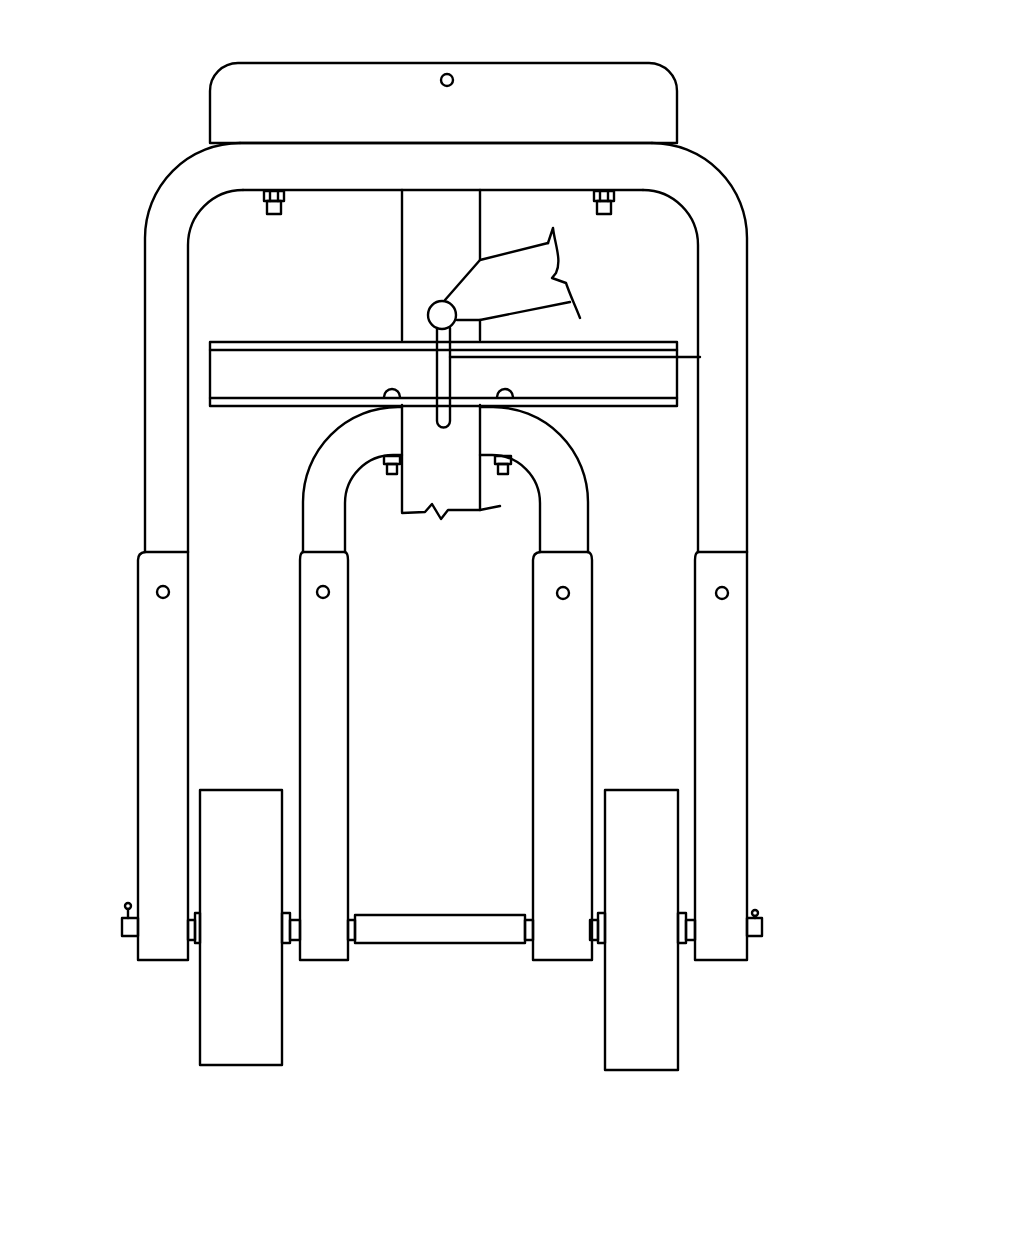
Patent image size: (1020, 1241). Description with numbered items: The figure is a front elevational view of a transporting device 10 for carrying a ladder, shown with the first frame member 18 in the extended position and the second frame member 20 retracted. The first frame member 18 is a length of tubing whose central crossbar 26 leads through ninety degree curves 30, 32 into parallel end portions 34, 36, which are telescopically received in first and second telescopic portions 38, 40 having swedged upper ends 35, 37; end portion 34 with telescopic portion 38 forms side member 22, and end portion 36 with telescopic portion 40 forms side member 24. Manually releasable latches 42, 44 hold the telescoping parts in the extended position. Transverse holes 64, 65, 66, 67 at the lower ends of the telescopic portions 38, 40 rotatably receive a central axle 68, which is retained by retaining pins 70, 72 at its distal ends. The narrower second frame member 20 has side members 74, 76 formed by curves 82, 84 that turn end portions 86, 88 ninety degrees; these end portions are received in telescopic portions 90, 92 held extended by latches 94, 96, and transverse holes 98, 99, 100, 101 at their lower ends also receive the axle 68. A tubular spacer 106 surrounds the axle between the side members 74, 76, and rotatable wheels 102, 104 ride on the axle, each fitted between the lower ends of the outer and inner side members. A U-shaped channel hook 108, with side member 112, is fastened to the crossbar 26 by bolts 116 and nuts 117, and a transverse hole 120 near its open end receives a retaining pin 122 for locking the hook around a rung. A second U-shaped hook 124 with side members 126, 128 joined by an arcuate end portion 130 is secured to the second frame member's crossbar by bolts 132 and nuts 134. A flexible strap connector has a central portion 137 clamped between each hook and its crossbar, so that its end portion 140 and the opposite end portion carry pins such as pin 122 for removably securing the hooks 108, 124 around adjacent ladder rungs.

The transporting device 10 is at (122, 212).
The first frame member 18 is at (321, 194).
The second frame member 20 is at (562, 460).
The side member 22 is at (142, 298).
The side member 24 is at (750, 277).
The crossbar 26 is at (351, 166).
The ninety degree curve 30 is at (158, 179).
The ninety degree curve 32 is at (706, 158).
The end portion 34 is at (143, 329).
The upper end of telescopic portion 35 is at (143, 553).
The end portion 36 is at (749, 495).
The upper end of telescopic portion 37 is at (750, 559).
The first telescopic portion 38 is at (137, 766).
The second telescopic portion 40 is at (748, 655).
The manually releasable latch 42 is at (157, 593).
The manually releasable latch 44 is at (729, 594).
The transverse hole 64 is at (98, 953).
The transverse hole 65 is at (134, 966).
The transverse hole 66 is at (713, 964).
The transverse hole 67 is at (748, 962).
The central axle 68 is at (762, 928).
The retaining pin 70 is at (124, 903).
The retaining pin 72 is at (758, 910).
The side member 74 is at (300, 721).
The side member 76 is at (592, 492).
The curve 82 is at (313, 442).
The curve 84 is at (575, 441).
The end portion 86 is at (302, 511).
The end portion 88 is at (590, 530).
The first telescopic portion 90 is at (298, 660).
The second telescopic portion 92 is at (593, 718).
The manually releasable latch 94 is at (318, 594).
The manually releasable latch 96 is at (568, 597).
The transverse hole 98 is at (303, 972).
The transverse hole 99 is at (350, 962).
The transverse hole 100 is at (526, 945).
The transverse hole 101 is at (575, 973).
The wheel 102 is at (200, 1012).
The wheel 104 is at (678, 1015).
The tubular spacer 106 is at (455, 946).
The U-shaped channel hook 108 is at (212, 88).
The side member of channel 112 is at (546, 66).
The bolt 116 is at (276, 218).
The nut 117 is at (266, 204).
The transverse hole 120 is at (451, 75).
The retaining pin 122 is at (628, 336).
The second U-shaped hook 124 is at (206, 367).
The side member of hook 126 is at (280, 338).
The side member of hook 128 is at (138, 425).
The arcuate end portion 130 is at (678, 392).
The bolt 132 is at (432, 453).
The nut 134 is at (385, 462).
The central portion of strap 137 is at (401, 258).
The end portion of strap 140 is at (523, 249).